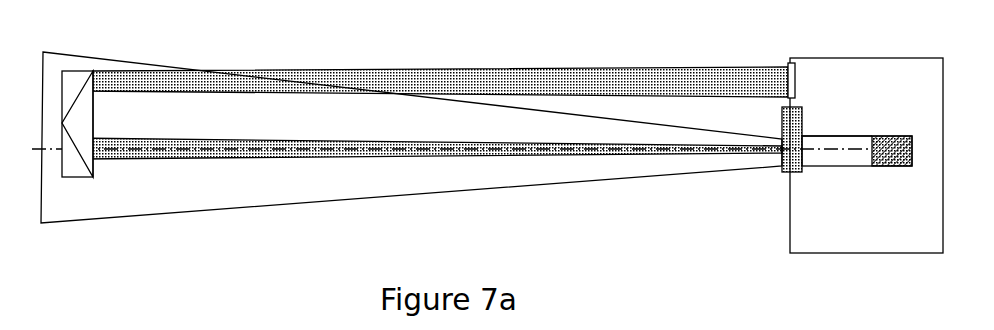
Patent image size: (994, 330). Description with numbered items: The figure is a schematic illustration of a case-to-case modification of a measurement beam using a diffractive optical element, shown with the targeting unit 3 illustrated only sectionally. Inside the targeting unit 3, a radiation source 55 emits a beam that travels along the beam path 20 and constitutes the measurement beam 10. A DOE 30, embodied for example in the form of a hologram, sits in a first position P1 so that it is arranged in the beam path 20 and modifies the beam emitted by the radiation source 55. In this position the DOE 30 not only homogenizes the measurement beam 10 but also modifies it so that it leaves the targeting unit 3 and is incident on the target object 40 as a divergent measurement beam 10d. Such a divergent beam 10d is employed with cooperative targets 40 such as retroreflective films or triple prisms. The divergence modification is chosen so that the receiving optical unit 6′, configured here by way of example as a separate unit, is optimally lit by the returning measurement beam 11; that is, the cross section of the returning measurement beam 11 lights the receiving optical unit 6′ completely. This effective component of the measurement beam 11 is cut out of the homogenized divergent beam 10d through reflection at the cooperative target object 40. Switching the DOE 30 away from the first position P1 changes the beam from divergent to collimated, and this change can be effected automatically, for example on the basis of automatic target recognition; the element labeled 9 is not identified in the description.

The targeting unit 3 is at (793, 156).
The receiving optical unit 6′ is at (791, 63).
The optical axis / core beam 9 is at (426, 197).
The measurement beam 10 is at (869, 171).
The divergent measurement beam 10d is at (411, 145).
The returning measurement beam 11 is at (434, 64).
The beam path 20 is at (875, 81).
The DOE 30 is at (735, 103).
The target object 40 is at (116, 105).
The radiation source 55 is at (902, 132).
The first position P1 is at (866, 216).